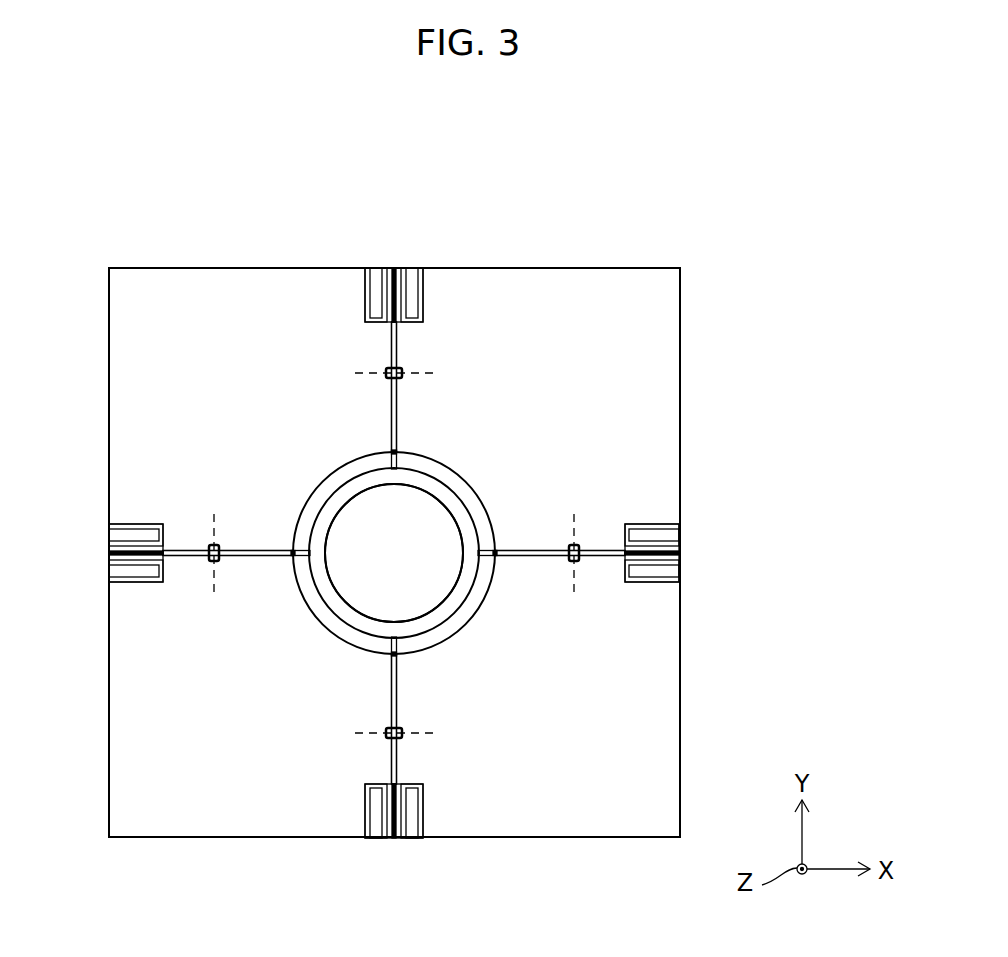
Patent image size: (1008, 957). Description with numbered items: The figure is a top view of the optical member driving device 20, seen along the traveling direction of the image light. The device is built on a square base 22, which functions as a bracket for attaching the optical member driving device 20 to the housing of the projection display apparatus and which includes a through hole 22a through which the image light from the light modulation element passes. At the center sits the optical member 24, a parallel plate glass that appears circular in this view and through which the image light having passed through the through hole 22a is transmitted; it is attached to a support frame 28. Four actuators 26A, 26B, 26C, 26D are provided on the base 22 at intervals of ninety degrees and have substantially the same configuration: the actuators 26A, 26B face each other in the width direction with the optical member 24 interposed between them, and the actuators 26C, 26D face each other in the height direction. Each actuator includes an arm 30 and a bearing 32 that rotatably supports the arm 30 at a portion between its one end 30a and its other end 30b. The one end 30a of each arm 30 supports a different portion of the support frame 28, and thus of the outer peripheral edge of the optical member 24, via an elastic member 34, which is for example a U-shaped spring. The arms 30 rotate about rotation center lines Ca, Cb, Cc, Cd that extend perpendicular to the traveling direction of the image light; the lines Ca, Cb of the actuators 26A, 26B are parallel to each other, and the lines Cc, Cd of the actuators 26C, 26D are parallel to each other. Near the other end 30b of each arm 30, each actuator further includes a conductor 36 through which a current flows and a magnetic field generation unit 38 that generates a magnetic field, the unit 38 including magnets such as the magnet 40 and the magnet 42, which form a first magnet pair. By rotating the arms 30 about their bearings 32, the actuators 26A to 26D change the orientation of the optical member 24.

The optical member driving device 20 is at (114, 236).
The base 22 is at (128, 828).
The through hole 22a is at (318, 482).
The optical member 24 is at (382, 566).
The actuator 26A is at (195, 498).
The actuator 26B is at (615, 503).
The actuator 26C is at (331, 754).
The actuator 26D is at (331, 352).
The support frame 28 is at (440, 605).
The arm 30 is at (398, 405).
The one end 30a is at (400, 455).
The other end 30b is at (393, 275).
The bearing 32 is at (408, 371).
The elastic member 34 is at (385, 458).
The conductor 36 is at (378, 300).
The magnetic field generation unit 38 is at (432, 250).
The magnet 40 is at (412, 304).
The magnet 42 is at (375, 275).
The rotation center line Ca is at (212, 569).
The rotation center line Cb is at (573, 568).
The rotation center line Cc is at (411, 733).
The rotation center line Cd is at (377, 374).